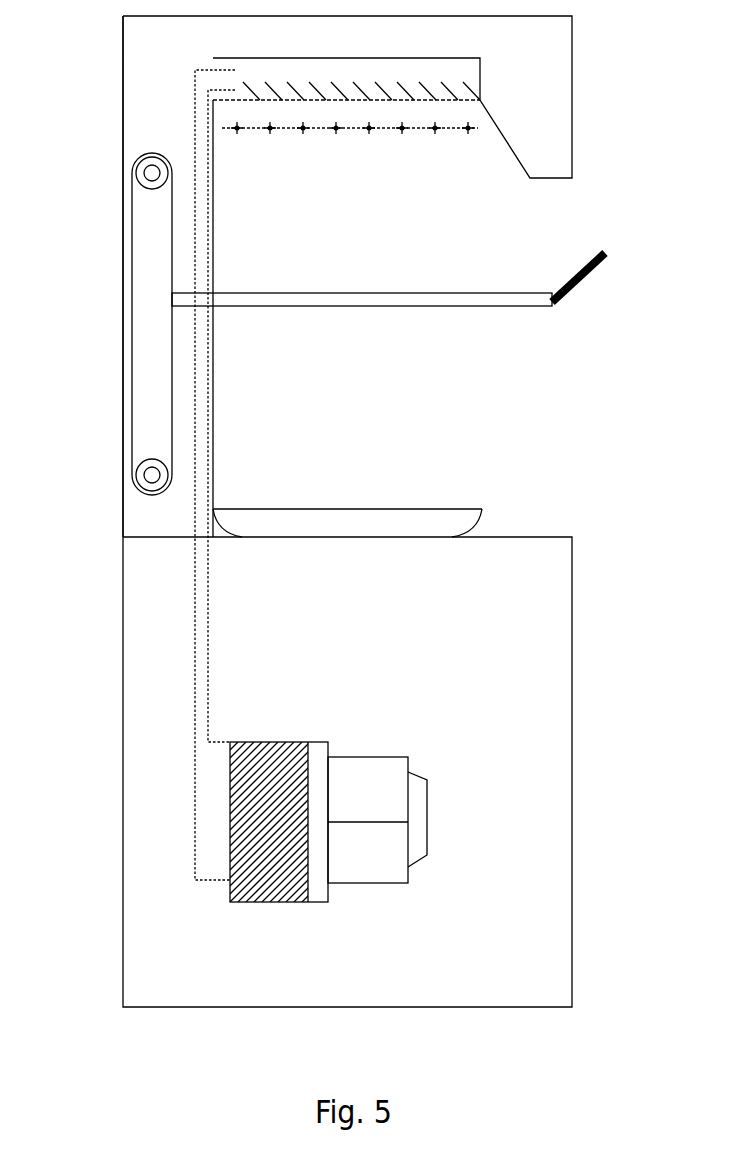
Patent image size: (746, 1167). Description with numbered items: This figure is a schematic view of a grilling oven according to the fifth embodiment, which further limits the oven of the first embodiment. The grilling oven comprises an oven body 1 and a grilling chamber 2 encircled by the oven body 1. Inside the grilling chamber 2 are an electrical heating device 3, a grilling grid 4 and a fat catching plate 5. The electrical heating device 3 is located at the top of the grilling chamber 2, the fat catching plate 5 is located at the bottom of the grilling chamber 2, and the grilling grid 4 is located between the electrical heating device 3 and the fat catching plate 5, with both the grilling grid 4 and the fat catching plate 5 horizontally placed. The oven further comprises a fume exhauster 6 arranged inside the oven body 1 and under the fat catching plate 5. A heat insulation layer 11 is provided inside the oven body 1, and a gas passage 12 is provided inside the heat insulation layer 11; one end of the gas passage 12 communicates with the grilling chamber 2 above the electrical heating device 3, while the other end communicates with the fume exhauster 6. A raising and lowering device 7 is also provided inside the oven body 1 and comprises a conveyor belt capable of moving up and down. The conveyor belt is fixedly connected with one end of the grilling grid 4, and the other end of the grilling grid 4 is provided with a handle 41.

The oven body 1 is at (60, 660).
The heat insulation layer 11 is at (157, 517).
The gas passage 12 is at (205, 696).
The grilling chamber 2 is at (400, 407).
The electrical heating device 3 is at (410, 130).
The grilling grid 4 is at (468, 298).
The handle 41 is at (600, 265).
The fat catching plate 5 is at (430, 518).
The fume exhauster 6 is at (398, 795).
The raising and lowering device 7 is at (137, 380).